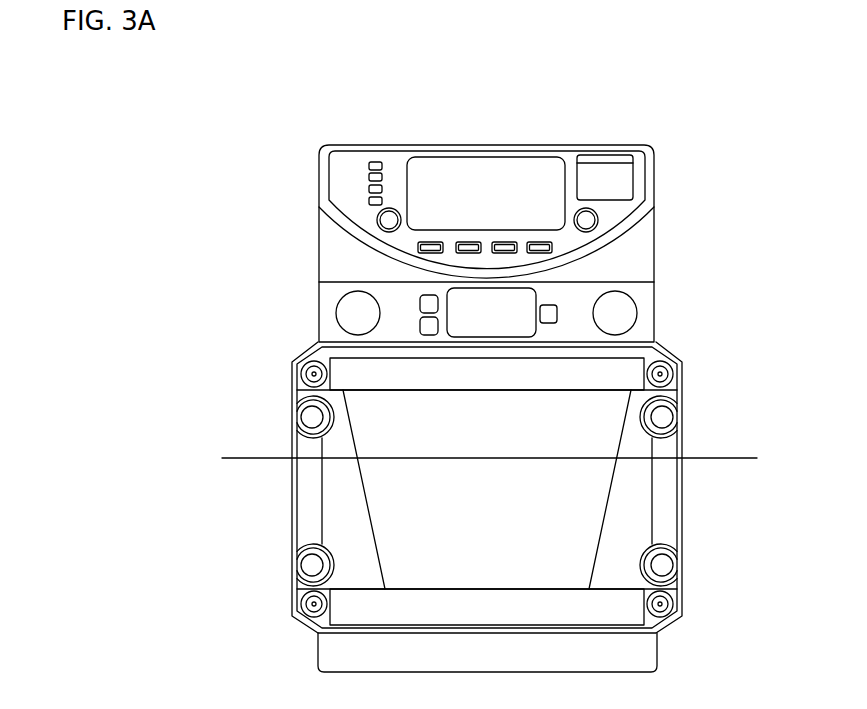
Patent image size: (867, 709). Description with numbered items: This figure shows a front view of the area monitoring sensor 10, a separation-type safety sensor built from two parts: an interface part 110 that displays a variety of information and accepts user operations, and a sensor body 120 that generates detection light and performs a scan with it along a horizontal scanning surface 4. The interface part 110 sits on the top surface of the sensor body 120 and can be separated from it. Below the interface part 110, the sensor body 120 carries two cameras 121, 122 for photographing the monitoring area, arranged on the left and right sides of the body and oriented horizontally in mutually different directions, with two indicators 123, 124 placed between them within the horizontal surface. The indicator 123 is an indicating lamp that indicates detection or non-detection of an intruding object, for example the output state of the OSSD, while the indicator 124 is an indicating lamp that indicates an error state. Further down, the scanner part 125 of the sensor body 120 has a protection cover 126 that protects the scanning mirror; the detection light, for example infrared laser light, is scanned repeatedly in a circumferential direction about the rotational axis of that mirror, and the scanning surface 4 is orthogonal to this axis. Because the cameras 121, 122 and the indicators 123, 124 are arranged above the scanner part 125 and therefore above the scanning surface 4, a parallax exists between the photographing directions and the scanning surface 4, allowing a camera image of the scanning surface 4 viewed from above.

The area monitoring sensor 10 is at (688, 100).
The interface part 110 is at (654, 208).
The sensor body 120 is at (655, 313).
The camera 121 is at (631, 298).
The camera 122 is at (340, 300).
The indicator 123 is at (549, 304).
The indicator 124 is at (535, 288).
The scanner part 125 is at (682, 437).
The protection cover 126 is at (657, 494).
The scanning surface 4 is at (745, 458).